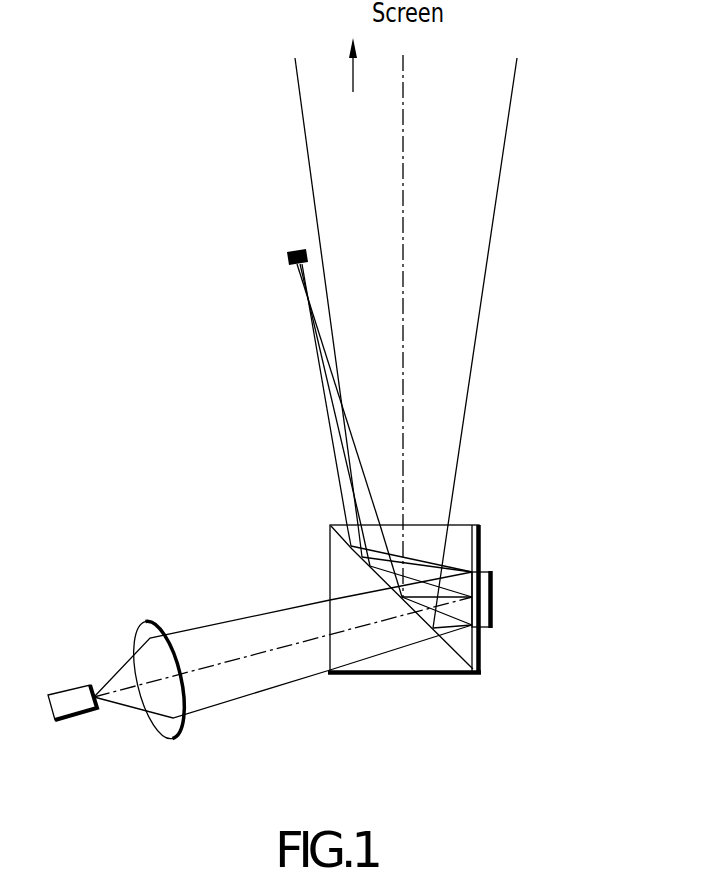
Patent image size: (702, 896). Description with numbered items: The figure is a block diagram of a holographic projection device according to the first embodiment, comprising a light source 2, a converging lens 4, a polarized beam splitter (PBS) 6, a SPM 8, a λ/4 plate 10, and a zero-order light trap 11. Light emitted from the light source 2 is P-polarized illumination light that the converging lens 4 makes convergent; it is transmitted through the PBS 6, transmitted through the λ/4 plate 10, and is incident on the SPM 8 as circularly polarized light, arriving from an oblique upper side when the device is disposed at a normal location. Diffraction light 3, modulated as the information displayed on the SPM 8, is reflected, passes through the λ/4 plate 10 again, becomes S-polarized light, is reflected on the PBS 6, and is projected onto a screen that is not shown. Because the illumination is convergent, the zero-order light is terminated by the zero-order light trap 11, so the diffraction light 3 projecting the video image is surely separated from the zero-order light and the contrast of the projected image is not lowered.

The light source 2 is at (72, 715).
The diffraction light 3 is at (465, 212).
The converging lens 4 is at (175, 740).
The polarized beam splitter 6 is at (377, 673).
The SPM 8 is at (493, 601).
The λ/4 plate 10 is at (483, 654).
The zero-order light trap 11 is at (287, 260).